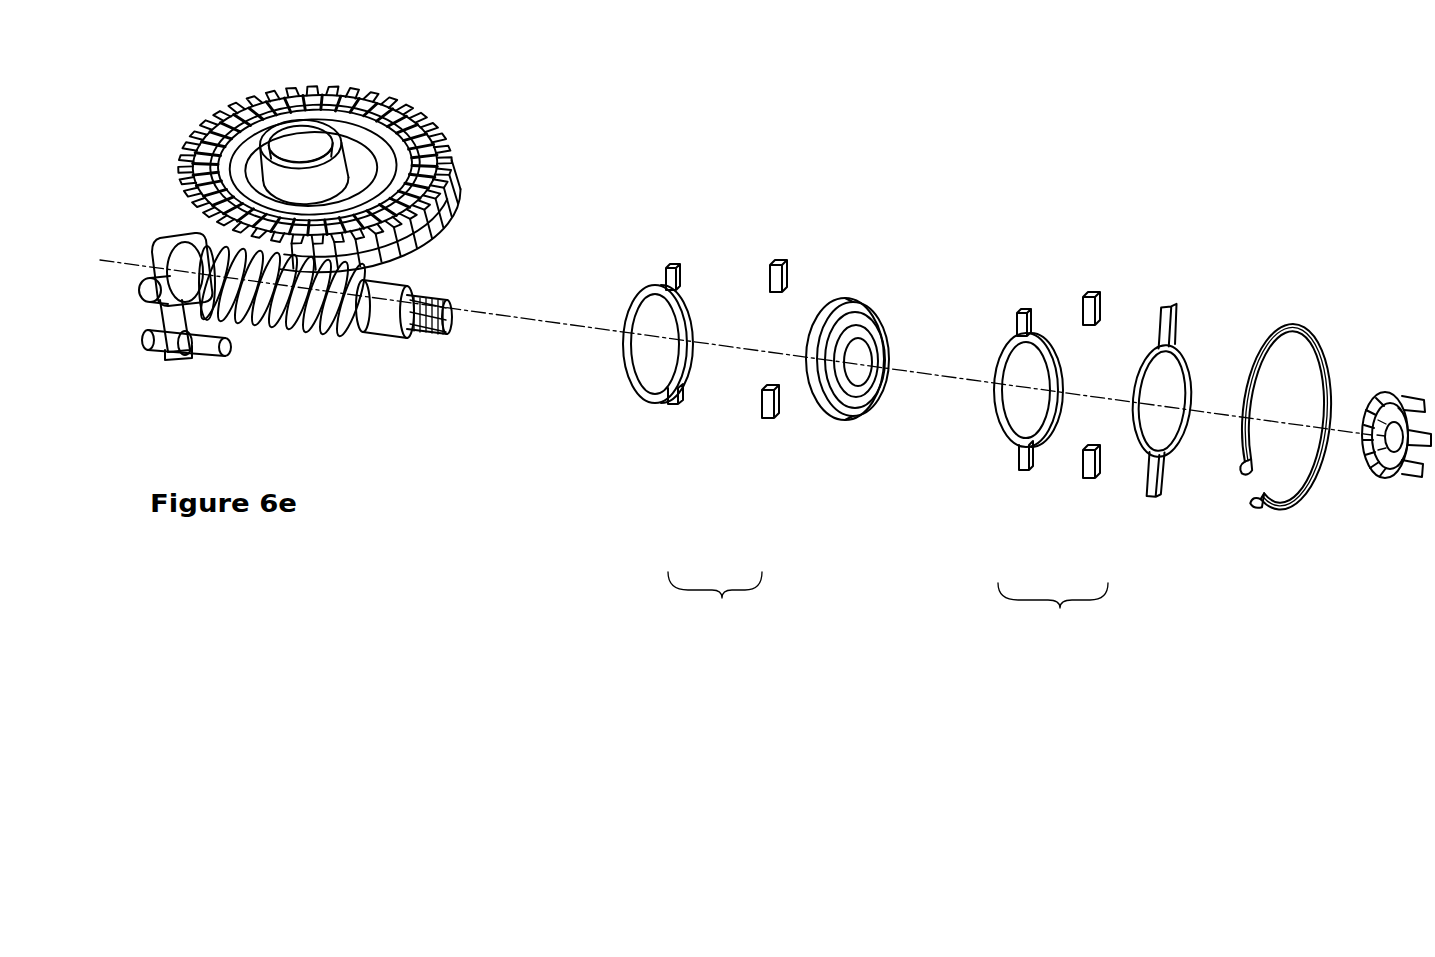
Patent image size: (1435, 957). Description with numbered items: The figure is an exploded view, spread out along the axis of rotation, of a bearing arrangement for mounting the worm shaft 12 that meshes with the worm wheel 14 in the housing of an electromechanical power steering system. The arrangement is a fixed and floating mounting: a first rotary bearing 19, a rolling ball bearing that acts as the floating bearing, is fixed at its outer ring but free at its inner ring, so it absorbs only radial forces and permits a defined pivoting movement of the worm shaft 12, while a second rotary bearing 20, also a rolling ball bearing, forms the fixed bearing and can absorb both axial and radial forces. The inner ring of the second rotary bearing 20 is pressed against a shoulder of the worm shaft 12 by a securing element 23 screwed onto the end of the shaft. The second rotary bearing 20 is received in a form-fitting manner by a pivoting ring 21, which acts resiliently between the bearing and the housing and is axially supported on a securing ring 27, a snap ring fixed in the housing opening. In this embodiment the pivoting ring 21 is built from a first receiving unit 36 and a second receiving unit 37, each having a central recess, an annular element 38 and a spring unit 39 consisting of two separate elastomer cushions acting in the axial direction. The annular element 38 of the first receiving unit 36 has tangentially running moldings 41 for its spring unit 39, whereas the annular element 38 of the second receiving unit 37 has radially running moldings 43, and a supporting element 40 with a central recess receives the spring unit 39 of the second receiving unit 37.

The worm wheel 14 is at (445, 122).
The worm shaft 12 is at (297, 326).
The first rotary bearing 19 is at (176, 372).
The second rotary bearing 20 is at (838, 310).
The pivoting ring 21 is at (868, 675).
The securing element 23 is at (1398, 394).
The securing ring 27 is at (1300, 326).
The first receiving unit 36 is at (715, 600).
The second receiving unit 37 is at (1053, 617).
The annular element 38 is at (614, 425).
The spring unit 39 is at (770, 437).
The supporting element 40 is at (1170, 513).
The moldings 41 is at (679, 268).
The moldings 43 is at (1023, 328).